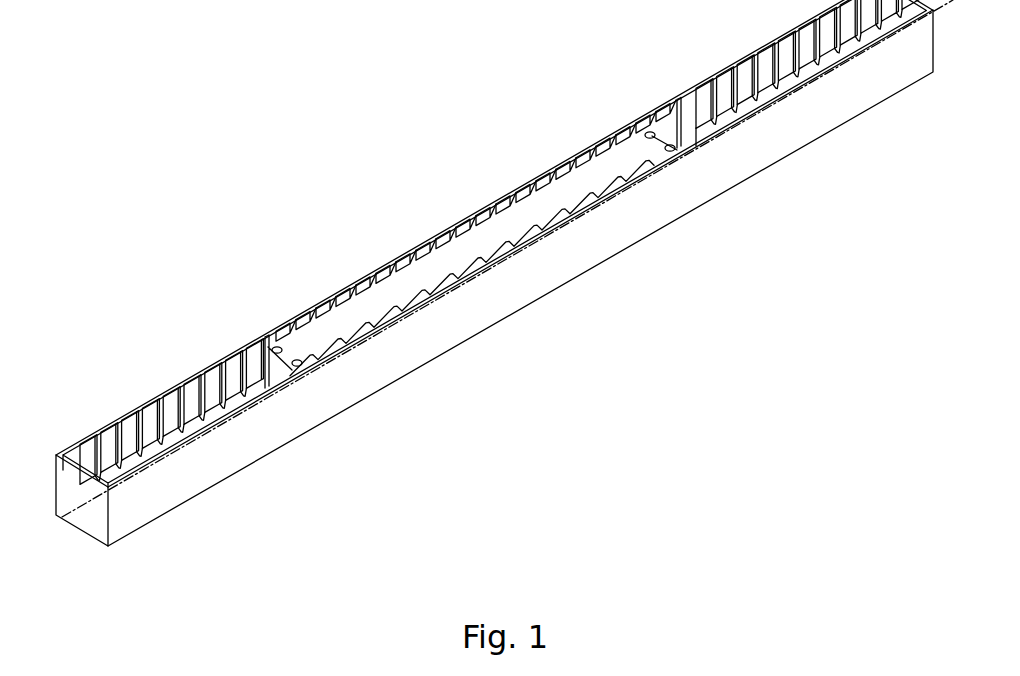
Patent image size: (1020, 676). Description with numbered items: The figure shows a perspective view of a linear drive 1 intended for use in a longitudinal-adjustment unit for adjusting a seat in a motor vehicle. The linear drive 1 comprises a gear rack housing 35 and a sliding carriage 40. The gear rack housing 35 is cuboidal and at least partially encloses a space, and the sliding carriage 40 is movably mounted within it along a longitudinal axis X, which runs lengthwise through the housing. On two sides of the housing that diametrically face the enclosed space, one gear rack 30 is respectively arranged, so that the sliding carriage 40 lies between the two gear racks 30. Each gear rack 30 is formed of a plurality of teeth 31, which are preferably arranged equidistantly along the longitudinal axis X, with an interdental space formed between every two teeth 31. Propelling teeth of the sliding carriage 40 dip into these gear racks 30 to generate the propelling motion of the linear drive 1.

The linear drive 1 is at (262, 105).
The gear rack 30 is at (690, 118).
The teeth 31 is at (225, 378).
The gear rack housing 35 is at (430, 331).
The sliding carriage 40 is at (477, 253).
The longitudinal axis X is at (598, 212).